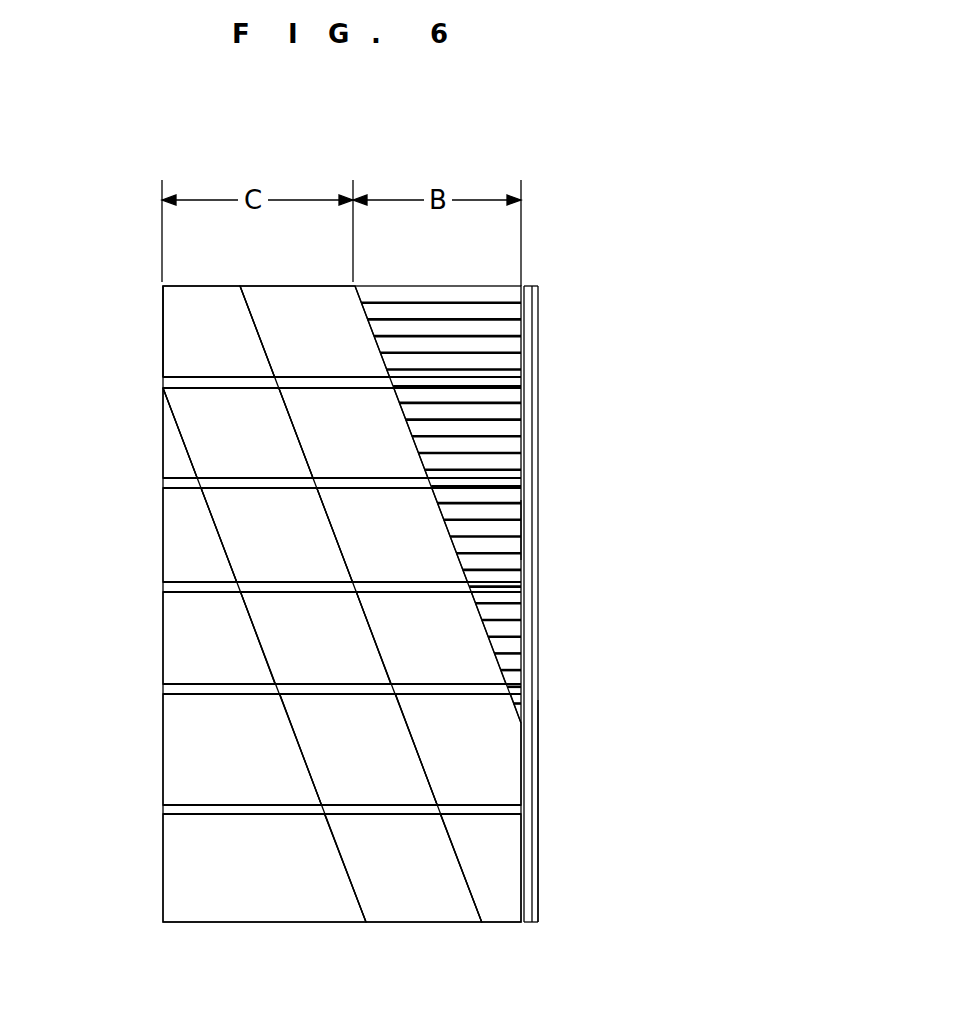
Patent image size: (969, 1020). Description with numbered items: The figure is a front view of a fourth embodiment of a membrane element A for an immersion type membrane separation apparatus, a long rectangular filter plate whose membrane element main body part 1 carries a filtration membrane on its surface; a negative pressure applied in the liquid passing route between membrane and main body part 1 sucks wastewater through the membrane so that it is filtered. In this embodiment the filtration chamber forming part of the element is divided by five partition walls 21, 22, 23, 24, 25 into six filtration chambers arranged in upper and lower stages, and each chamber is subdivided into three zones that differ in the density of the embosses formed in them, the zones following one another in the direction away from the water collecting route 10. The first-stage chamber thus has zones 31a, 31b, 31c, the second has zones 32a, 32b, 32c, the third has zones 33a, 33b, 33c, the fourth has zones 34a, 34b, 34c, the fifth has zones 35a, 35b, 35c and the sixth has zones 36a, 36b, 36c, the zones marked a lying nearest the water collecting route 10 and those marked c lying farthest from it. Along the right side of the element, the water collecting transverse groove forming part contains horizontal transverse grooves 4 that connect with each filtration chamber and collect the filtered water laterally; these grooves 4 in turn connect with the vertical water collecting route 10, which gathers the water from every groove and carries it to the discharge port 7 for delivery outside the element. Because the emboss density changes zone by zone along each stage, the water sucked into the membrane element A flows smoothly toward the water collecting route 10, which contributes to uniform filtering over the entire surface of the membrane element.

The membrane element main body part 1 is at (543, 737).
The transverse grooves 4 is at (500, 344).
The discharge port 7 is at (538, 297).
The water collecting route 10 is at (530, 463).
The membrane element A is at (541, 537).
The partition wall 21 is at (162, 381).
The partition wall 22 is at (162, 483).
The partition wall 23 is at (162, 586).
The partition wall 24 is at (162, 688).
The partition wall 25 is at (162, 808).
The zone of filtration chamber 31 31a is at (315, 331).
The zone of filtration chamber 31 31b is at (219, 331).
The zone of filtration chamber 31 31c is at (165, 372).
The zone of filtration chamber 32 32a is at (353, 433).
The zone of filtration chamber 32 32b is at (238, 433).
The zone of filtration chamber 32 32c is at (175, 442).
The zone of filtration chamber 33 33a is at (392, 535).
The zone of filtration chamber 33 33b is at (277, 535).
The zone of filtration chamber 33 33c is at (177, 545).
The zone of filtration chamber 34 34a is at (431, 638).
The zone of filtration chamber 34 34b is at (316, 638).
The zone of filtration chamber 34 34c is at (219, 638).
The zone of filtration chamber 35 35a is at (458, 749).
The zone of filtration chamber 35 35b is at (359, 749).
The zone of filtration chamber 35 35c is at (242, 749).
The zone of filtration chamber 36 36a is at (502, 860).
The zone of filtration chamber 36 36b is at (403, 868).
The zone of filtration chamber 36 36c is at (264, 868).